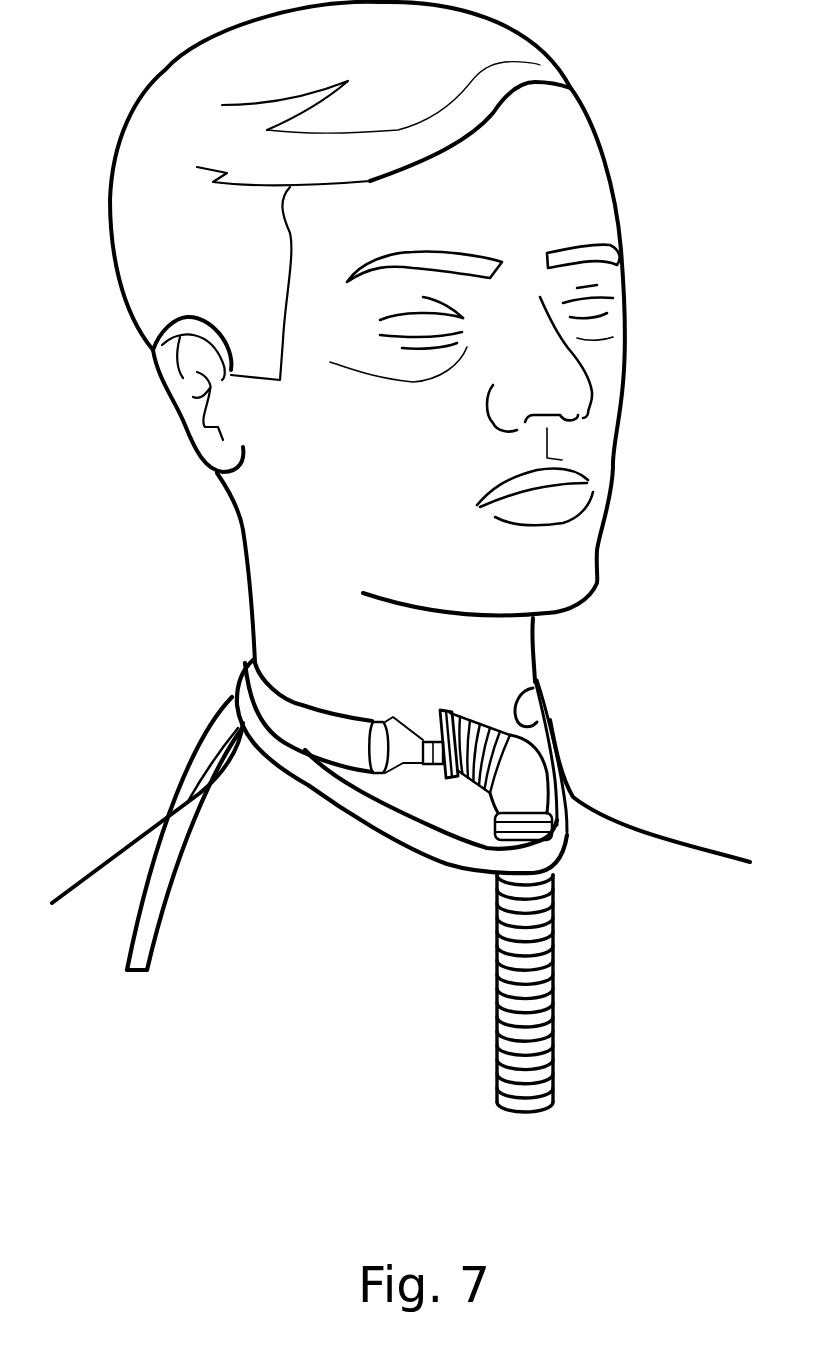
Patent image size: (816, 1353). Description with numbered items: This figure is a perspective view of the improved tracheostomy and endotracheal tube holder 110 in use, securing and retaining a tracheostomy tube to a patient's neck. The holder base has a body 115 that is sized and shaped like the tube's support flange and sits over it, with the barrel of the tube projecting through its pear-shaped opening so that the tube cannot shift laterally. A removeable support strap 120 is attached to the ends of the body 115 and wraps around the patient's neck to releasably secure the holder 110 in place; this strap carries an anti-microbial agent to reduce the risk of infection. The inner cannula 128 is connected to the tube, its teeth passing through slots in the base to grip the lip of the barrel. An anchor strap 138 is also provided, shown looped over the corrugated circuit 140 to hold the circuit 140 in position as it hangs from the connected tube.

The tracheostomy and endotracheal tube holder 110 is at (585, 688).
The body 115 is at (407, 727).
The support strap 120 is at (305, 720).
The inner cannula 128 is at (430, 797).
The anchor strap 138 is at (543, 850).
The circuit 140 is at (532, 925).